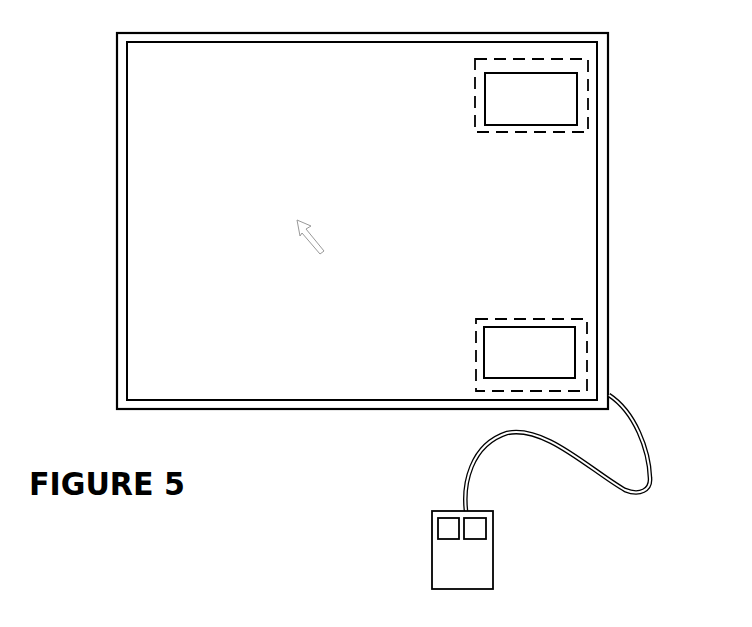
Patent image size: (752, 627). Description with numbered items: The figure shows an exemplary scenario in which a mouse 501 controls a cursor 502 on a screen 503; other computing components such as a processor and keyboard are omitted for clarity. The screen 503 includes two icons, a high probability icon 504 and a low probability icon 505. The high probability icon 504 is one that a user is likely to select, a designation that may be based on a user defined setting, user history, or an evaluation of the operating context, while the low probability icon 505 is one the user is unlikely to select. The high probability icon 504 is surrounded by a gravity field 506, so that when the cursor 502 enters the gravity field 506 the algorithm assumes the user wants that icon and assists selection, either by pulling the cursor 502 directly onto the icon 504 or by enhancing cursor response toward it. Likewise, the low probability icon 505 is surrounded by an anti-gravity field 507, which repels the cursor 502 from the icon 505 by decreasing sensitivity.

The mouse 501 is at (493, 563).
The cursor 502 is at (320, 240).
The screen 503 is at (212, 139).
The high probability icon 504 is at (567, 106).
The low probability icon 505 is at (567, 340).
The gravity field 506 is at (583, 91).
The anti-gravity field 507 is at (479, 333).